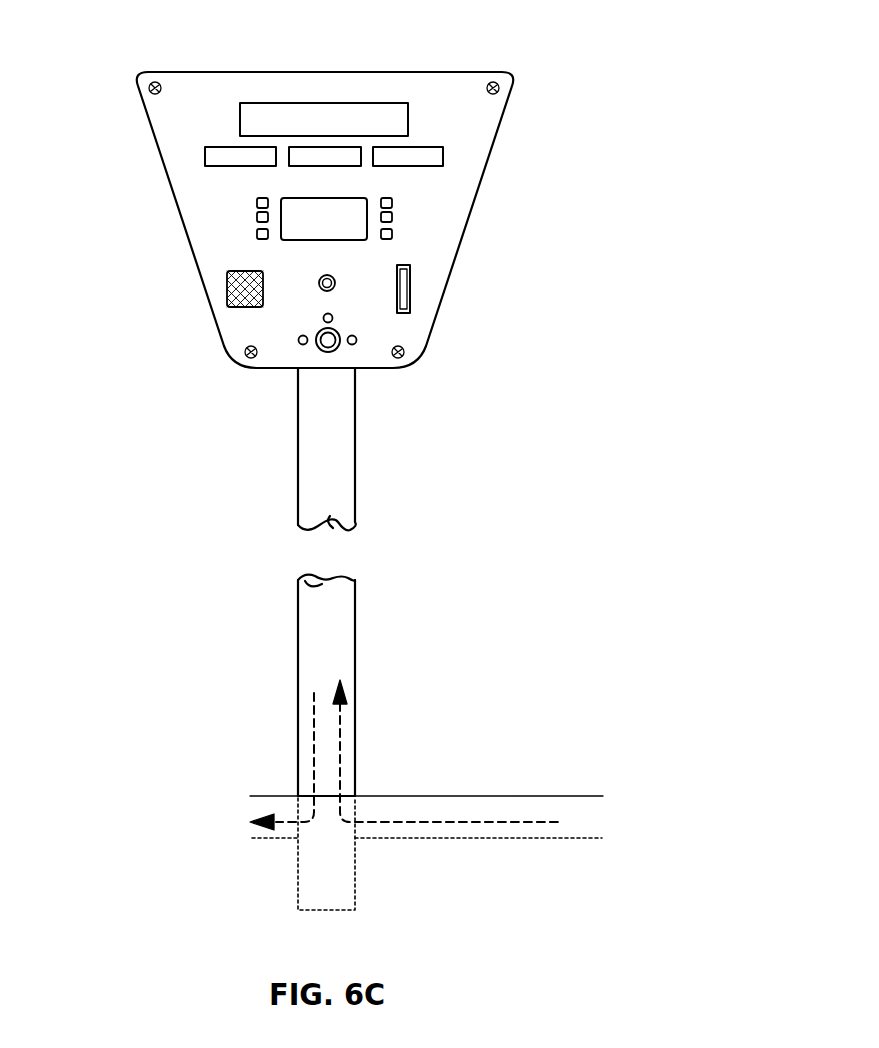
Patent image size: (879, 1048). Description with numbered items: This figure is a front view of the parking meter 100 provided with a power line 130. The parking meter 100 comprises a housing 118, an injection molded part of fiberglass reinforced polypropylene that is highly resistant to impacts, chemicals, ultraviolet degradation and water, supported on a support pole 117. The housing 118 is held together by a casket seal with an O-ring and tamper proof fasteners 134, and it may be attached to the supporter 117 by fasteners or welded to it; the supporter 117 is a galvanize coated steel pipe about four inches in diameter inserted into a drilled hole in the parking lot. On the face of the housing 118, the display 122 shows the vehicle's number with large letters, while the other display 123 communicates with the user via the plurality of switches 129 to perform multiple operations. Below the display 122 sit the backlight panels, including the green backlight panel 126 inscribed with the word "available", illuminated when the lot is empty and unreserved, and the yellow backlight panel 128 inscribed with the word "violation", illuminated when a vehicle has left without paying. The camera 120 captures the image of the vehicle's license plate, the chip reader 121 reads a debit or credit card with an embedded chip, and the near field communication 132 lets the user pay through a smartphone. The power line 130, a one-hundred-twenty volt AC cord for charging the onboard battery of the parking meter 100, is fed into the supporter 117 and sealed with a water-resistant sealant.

The parking meter 100 is at (137, 64).
The support pole 117 is at (298, 490).
The housing 118 is at (150, 137).
The camera 120 is at (342, 344).
The chip reader 121 is at (410, 297).
The display 122 is at (320, 103).
The display 123 is at (210, 147).
The green backlight panel 126 is at (355, 166).
The yellow backlight panel 128 is at (415, 147).
The switches 129 is at (258, 233).
The power line 130 is at (422, 822).
The near field communication 132 is at (227, 295).
The tamper proof fasteners 134 is at (243, 352).